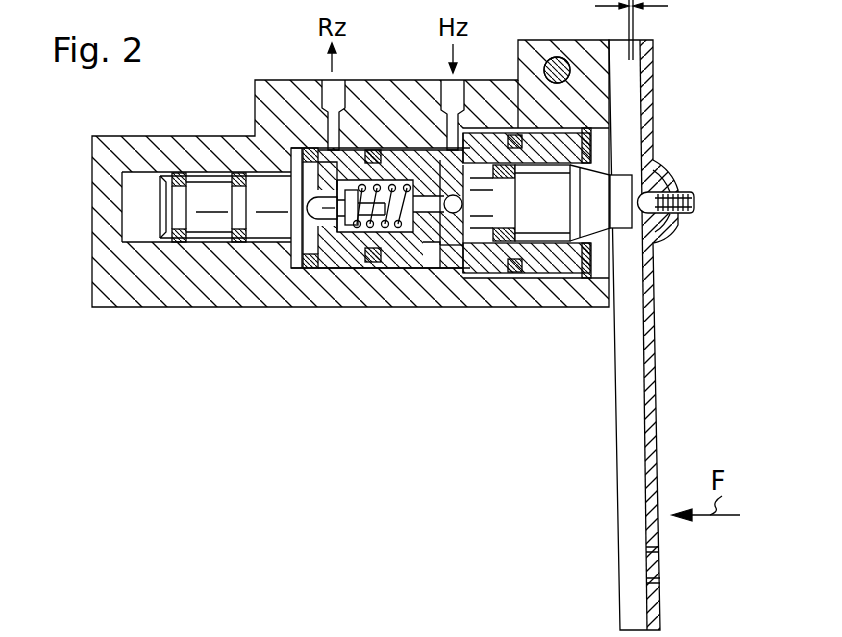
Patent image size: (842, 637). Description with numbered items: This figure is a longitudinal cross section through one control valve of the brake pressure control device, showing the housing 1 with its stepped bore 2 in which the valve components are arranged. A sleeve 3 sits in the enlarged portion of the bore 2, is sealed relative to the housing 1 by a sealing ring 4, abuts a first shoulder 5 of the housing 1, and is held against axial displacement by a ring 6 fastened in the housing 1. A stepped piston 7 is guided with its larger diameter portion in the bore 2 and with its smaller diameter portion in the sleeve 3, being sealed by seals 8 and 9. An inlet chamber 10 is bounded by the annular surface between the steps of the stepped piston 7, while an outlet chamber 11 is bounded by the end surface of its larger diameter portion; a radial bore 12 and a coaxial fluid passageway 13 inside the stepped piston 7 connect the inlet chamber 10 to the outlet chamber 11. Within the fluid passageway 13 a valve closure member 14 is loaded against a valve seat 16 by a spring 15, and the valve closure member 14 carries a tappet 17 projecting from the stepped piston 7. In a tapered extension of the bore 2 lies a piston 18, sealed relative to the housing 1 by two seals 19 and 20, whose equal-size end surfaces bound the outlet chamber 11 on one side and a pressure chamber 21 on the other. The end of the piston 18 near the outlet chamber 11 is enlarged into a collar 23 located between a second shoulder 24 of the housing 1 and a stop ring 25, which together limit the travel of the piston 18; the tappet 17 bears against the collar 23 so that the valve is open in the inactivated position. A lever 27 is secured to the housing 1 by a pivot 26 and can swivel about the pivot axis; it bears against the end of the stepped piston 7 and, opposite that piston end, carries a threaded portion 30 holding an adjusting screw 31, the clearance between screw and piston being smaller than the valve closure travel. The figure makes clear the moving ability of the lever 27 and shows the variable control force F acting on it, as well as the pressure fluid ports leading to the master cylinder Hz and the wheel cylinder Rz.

The housing 1 is at (130, 290).
The stepped bore 2 is at (460, 266).
The sleeve 3 is at (553, 265).
The sealing ring 4 is at (514, 272).
The first shoulder 5 is at (470, 135).
The ring 6 is at (592, 146).
The stepped piston 7 is at (598, 222).
The seal 8 is at (384, 262).
The seal 9 is at (500, 258).
The inlet chamber 10 is at (432, 255).
The outlet chamber 11 is at (306, 158).
The radial bore 12 is at (453, 200).
The coaxial fluid passageway 13 is at (400, 228).
The valve closure member 14 is at (366, 245).
The spring 15 is at (410, 262).
The valve seat 16 is at (356, 240).
The tappet 17 is at (346, 226).
The piston 18 is at (200, 192).
The seal 19 is at (176, 180).
The seal 20 is at (238, 183).
The pressure chamber 21 is at (137, 185).
The collar 23 is at (305, 222).
The second shoulder 24 is at (294, 155).
The stop ring 25 is at (322, 232).
The pivot 26 is at (557, 70).
The lever 27 is at (616, 420).
The threaded portion 30 is at (672, 222).
The adjusting screw 31 is at (680, 198).